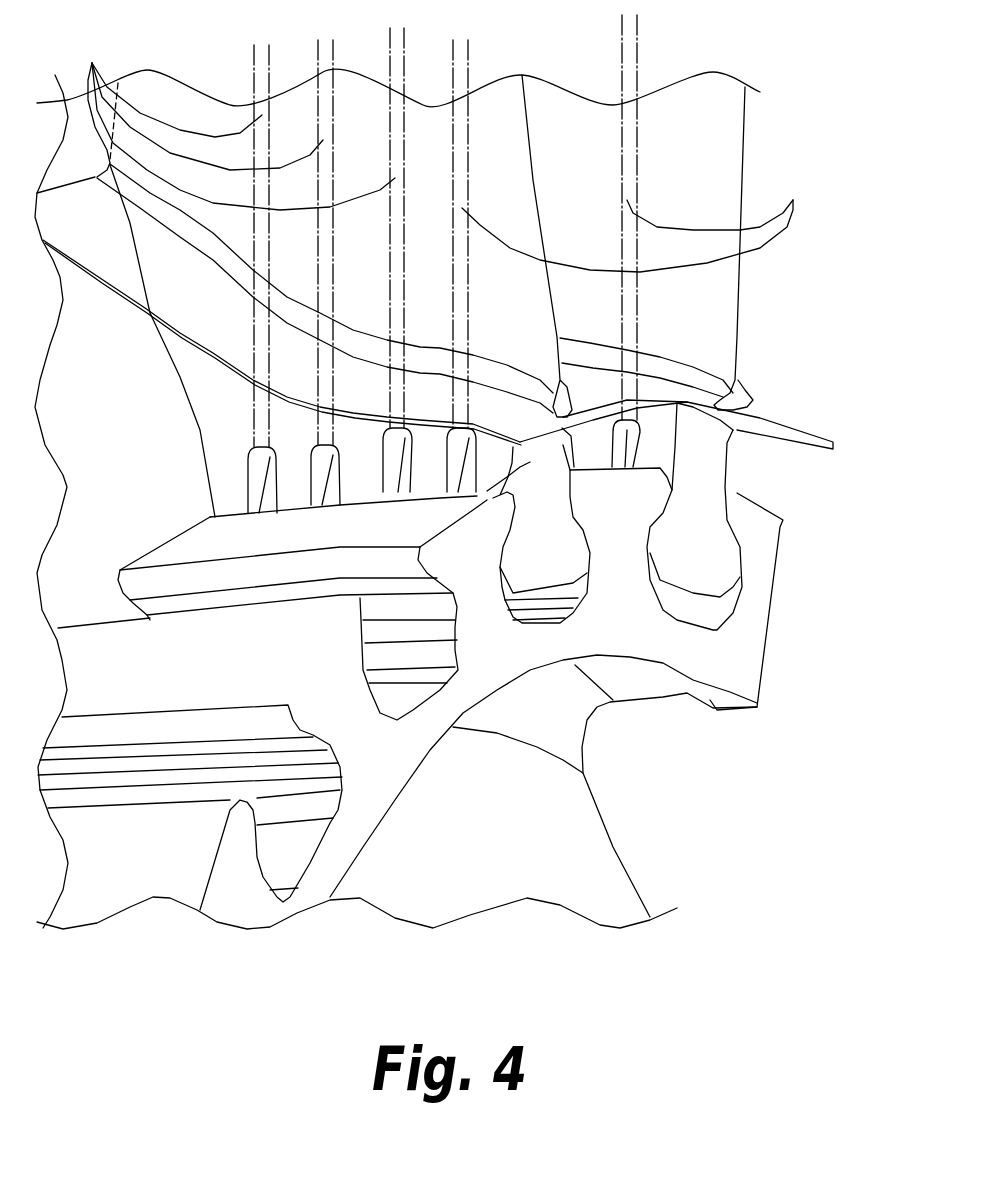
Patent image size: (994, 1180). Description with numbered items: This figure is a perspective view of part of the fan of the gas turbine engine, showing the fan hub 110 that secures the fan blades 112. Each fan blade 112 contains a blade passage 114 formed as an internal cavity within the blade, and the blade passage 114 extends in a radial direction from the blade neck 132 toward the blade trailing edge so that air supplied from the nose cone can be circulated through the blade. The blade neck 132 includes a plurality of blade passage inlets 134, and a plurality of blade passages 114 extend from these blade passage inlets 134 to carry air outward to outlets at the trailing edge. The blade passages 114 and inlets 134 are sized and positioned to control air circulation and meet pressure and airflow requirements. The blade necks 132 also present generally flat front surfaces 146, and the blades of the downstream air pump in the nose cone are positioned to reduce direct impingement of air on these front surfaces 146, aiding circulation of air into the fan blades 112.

The fan hub 110 is at (753, 650).
The fan blade 112 is at (498, 97).
The blade passage 114 is at (443, 153).
The blade neck 132 is at (707, 457).
The blade passage inlet 134 is at (487, 491).
The front surface 146 is at (550, 478).